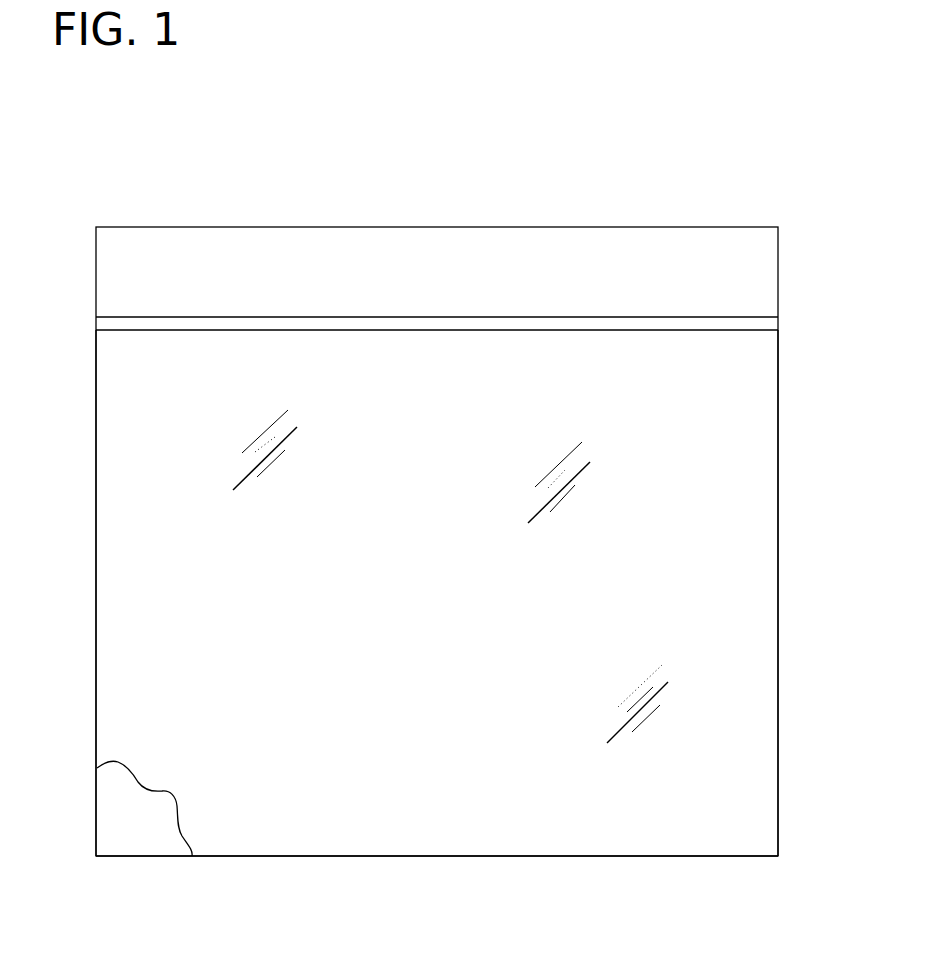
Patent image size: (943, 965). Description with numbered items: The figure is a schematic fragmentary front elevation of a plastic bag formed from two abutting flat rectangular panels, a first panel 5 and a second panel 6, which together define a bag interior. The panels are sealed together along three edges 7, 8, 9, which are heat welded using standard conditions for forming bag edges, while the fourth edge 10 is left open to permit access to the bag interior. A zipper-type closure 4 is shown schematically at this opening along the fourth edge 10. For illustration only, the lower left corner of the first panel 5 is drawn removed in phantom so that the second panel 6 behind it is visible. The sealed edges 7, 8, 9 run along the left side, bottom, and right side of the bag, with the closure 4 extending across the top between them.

The fourth edge 10 is at (518, 227).
The zipper-type closure 4 is at (717, 315).
The first panel 5 is at (112, 545).
The second panel 6 is at (123, 816).
The sealed edge 7 is at (96, 398).
The sealed edge 8 is at (505, 856).
The sealed edge 9 is at (778, 487).